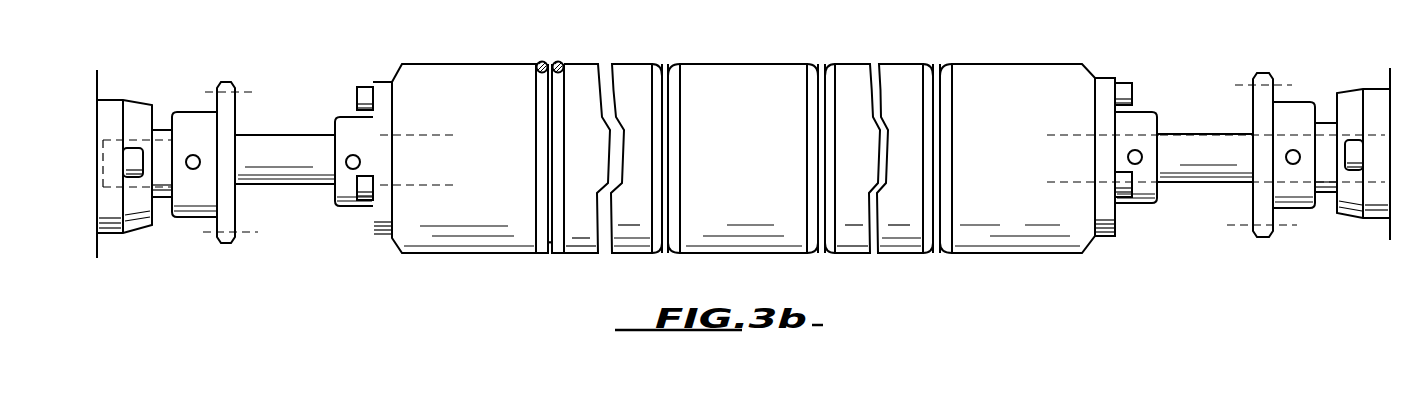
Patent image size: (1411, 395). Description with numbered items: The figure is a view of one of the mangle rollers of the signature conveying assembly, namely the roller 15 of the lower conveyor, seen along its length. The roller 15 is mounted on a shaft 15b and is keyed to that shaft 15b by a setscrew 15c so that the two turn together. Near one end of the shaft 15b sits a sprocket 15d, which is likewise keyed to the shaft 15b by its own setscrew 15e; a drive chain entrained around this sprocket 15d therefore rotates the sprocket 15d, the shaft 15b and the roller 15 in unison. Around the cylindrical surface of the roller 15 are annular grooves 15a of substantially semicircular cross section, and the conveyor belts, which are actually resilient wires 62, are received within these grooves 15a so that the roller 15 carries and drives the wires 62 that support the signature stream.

The roller 15 is at (756, 171).
The grooves 15a is at (558, 140).
The shaft 15b is at (275, 187).
The setscrew 15c is at (352, 170).
The sprocket 15d is at (210, 112).
The setscrew 15e is at (193, 154).
The wires 62 is at (557, 61).